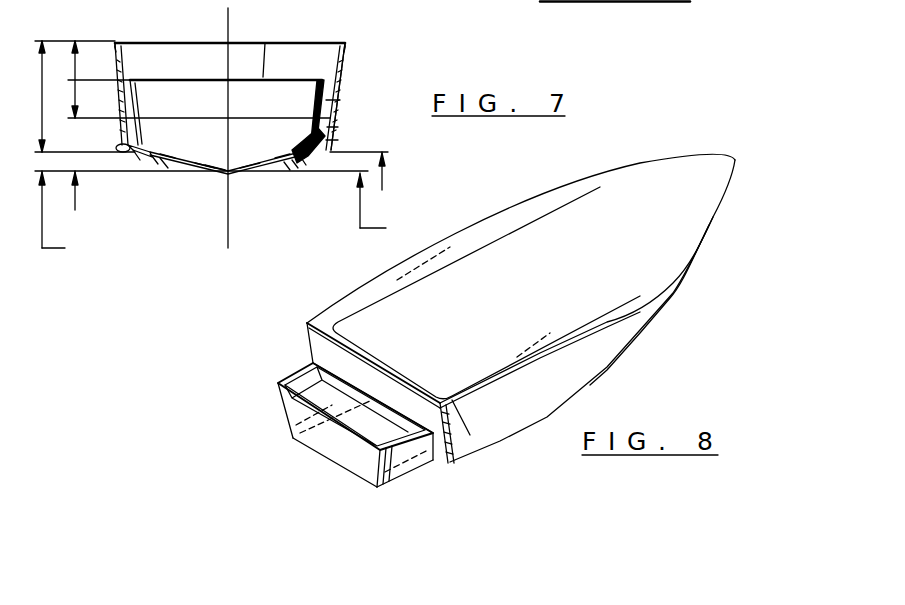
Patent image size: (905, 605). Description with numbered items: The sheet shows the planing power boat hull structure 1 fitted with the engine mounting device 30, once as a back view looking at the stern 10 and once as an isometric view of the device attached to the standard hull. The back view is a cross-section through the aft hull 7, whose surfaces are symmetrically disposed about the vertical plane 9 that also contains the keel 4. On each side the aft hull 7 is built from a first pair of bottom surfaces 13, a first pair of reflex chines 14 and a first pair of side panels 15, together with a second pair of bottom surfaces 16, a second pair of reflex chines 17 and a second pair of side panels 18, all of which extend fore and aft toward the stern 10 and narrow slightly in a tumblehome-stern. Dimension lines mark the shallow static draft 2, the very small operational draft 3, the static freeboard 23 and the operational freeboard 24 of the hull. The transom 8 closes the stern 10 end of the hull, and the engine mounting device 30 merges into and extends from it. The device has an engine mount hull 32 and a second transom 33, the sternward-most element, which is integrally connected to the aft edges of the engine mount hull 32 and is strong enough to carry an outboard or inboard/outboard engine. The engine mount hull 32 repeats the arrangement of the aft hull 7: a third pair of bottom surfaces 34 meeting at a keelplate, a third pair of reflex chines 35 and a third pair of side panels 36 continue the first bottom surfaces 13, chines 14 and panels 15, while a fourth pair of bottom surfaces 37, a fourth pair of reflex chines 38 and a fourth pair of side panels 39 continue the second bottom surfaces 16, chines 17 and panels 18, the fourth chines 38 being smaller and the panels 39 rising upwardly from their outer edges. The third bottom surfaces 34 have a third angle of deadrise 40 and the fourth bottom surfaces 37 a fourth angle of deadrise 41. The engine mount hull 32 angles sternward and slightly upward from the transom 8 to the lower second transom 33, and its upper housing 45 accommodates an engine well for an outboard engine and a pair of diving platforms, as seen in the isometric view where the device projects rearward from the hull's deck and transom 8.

In FIG. 7, the boat hull structure 1 is at (324, 28).
In FIG. 7, the static draft 2 is at (80, 135).
In FIG. 7, the operational draft 3 is at (61, 215).
In FIG. 7, the keel 4 is at (230, 172).
In FIG. 7, the aft hull 7 is at (115, 43).
In FIG. 7, the transom 8 is at (148, 69).
In FIG. 8, the transom 8 is at (308, 333).
In FIG. 7, the vertical plane 9 is at (229, 18).
In FIG. 7, the stern 10 is at (215, 45).
In FIG. 7, the first pair of bottom surfaces 13 is at (207, 168).
In FIG. 7, the first pair of reflex chines 14 is at (165, 160).
In FIG. 7, the first pair of side panels 15 is at (298, 156).
In FIG. 7, the second pair of bottom surfaces 16 is at (148, 149).
In FIG. 7, the second pair of reflex chines 17 is at (123, 148).
In FIG. 7, the second pair of side panels 18 is at (120, 98).
In FIG. 7, the static freeboard 23 is at (194, 79).
In FIG. 7, the operational freeboard 24 is at (80, 96).
In FIG. 7, the engine mounting device 30 is at (372, 70).
In FIG. 8, the engine mounting device 30 is at (243, 403).
In FIG. 7, the engine mount hull 32 is at (330, 113).
In FIG. 8, the engine mount hull 32 is at (287, 402).
In FIG. 7, the second transom 33 is at (263, 114).
In FIG. 8, the second transom 33 is at (345, 460).
In FIG. 7, the third pair of bottom surfaces 34 is at (217, 168).
In FIG. 8, the third pair of bottom surfaces 34 is at (330, 456).
In FIG. 7, the third pair of reflex chines 35 is at (167, 159).
In FIG. 8, the third pair of reflex chines 35 is at (283, 443).
In FIG. 7, the third pair of side panels 36 is at (157, 156).
In FIG. 8, the third pair of side panels 36 is at (284, 440).
In FIG. 7, the fourth pair of bottom surfaces 37 is at (138, 151).
In FIG. 8, the fourth pair of bottom surfaces 37 is at (287, 437).
In FIG. 7, the fourth pair of reflex chines 38 is at (121, 155).
In FIG. 8, the fourth pair of reflex chines 38 is at (285, 436).
In FIG. 7, the fourth pair of side panels 39 is at (378, 93).
In FIG. 8, the fourth pair of side panels 39 is at (305, 362).
In FIG. 7, the third angle of deadrise 40 is at (387, 208).
In FIG. 7, the fourth angle of deadrise 41 is at (334, 127).
In FIG. 7, the upper housing 45 is at (265, 43).